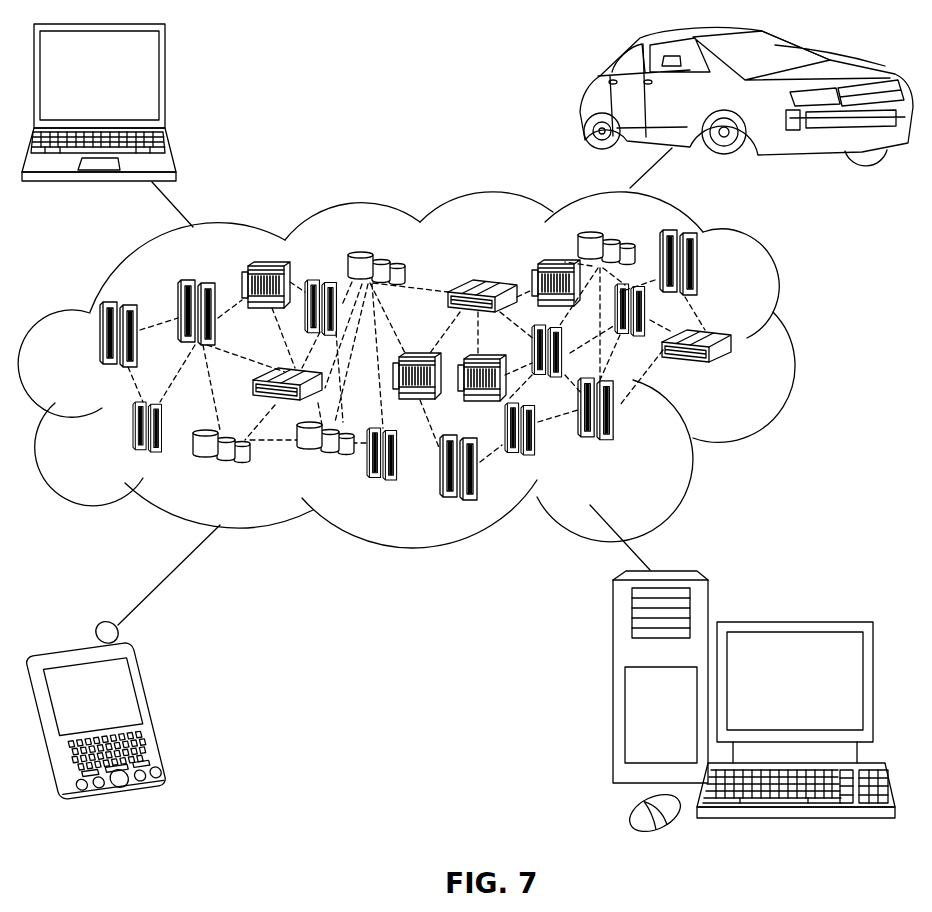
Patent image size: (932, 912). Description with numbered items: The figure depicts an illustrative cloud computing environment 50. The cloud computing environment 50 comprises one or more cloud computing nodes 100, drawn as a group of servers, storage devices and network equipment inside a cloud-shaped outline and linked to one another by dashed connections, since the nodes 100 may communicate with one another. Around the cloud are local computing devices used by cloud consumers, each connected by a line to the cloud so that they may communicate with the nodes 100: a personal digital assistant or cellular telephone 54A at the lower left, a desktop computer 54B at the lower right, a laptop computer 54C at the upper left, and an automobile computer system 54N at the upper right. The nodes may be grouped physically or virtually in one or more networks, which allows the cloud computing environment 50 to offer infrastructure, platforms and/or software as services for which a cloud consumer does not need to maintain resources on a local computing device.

The cloud computing environment 50 is at (792, 343).
The cloud computing nodes 100 is at (738, 372).
The personal digital assistant (PDA) or cellular telephone 54A is at (157, 708).
The desktop computer 54B is at (792, 620).
The laptop computer 54C is at (165, 82).
The automobile computer system 54N is at (582, 98).